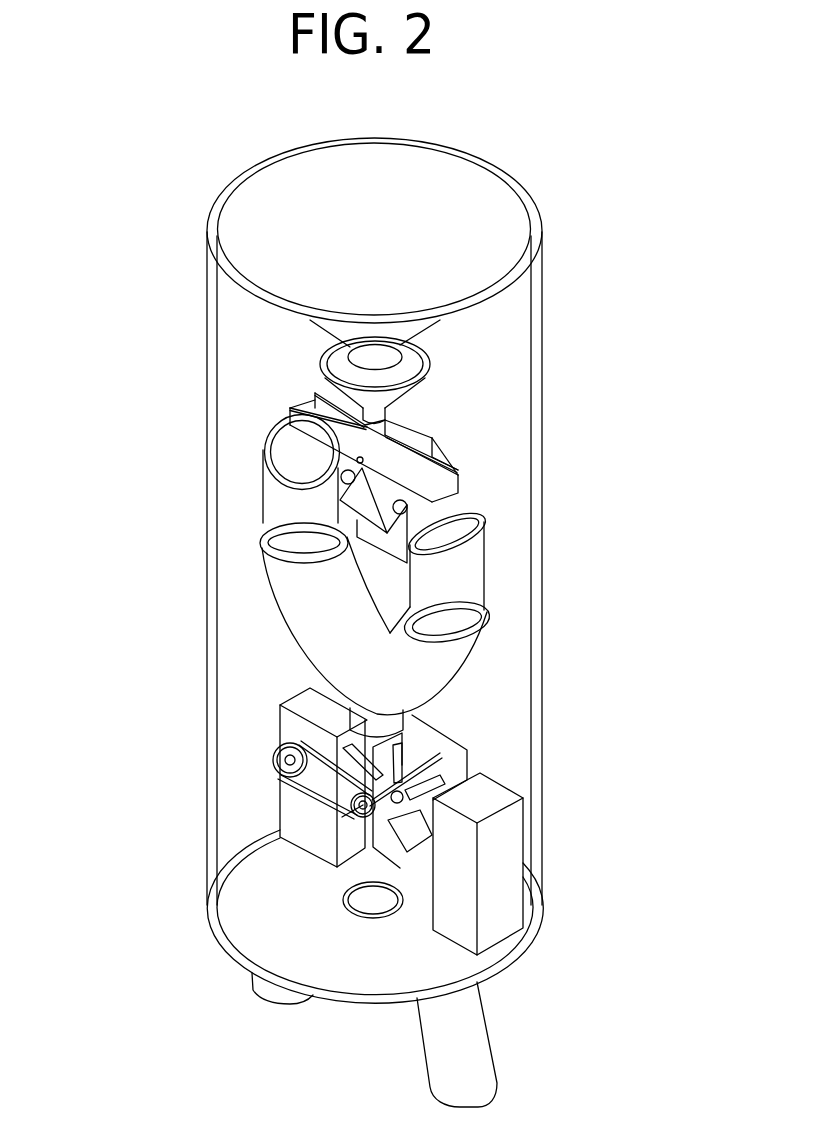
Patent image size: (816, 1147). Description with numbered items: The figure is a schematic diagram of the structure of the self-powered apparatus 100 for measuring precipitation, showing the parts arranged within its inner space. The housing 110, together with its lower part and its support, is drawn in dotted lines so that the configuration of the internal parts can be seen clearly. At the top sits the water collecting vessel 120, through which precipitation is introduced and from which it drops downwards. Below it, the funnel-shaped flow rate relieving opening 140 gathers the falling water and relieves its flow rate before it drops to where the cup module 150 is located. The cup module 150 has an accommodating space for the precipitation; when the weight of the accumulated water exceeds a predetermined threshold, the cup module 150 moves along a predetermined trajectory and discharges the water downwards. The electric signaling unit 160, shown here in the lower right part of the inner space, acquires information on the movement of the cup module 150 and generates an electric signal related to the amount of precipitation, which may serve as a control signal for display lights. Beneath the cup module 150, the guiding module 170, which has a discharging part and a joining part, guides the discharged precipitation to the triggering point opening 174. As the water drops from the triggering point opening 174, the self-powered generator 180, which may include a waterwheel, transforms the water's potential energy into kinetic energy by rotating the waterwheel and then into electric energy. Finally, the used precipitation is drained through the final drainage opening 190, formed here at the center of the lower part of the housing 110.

The self-powered apparatus for measuring precipitation 100 is at (87, 106).
The housing 110 is at (207, 318).
The water collecting vessel 120 is at (383, 344).
The flow rate relieving opening 140 is at (388, 392).
The cup module 150 is at (435, 472).
The guiding module 170 is at (500, 600).
The triggering point opening 174 is at (377, 720).
The self-powered generator 180 is at (407, 758).
The electric signaling unit 160 is at (500, 885).
The final drainage opening 190 is at (372, 903).